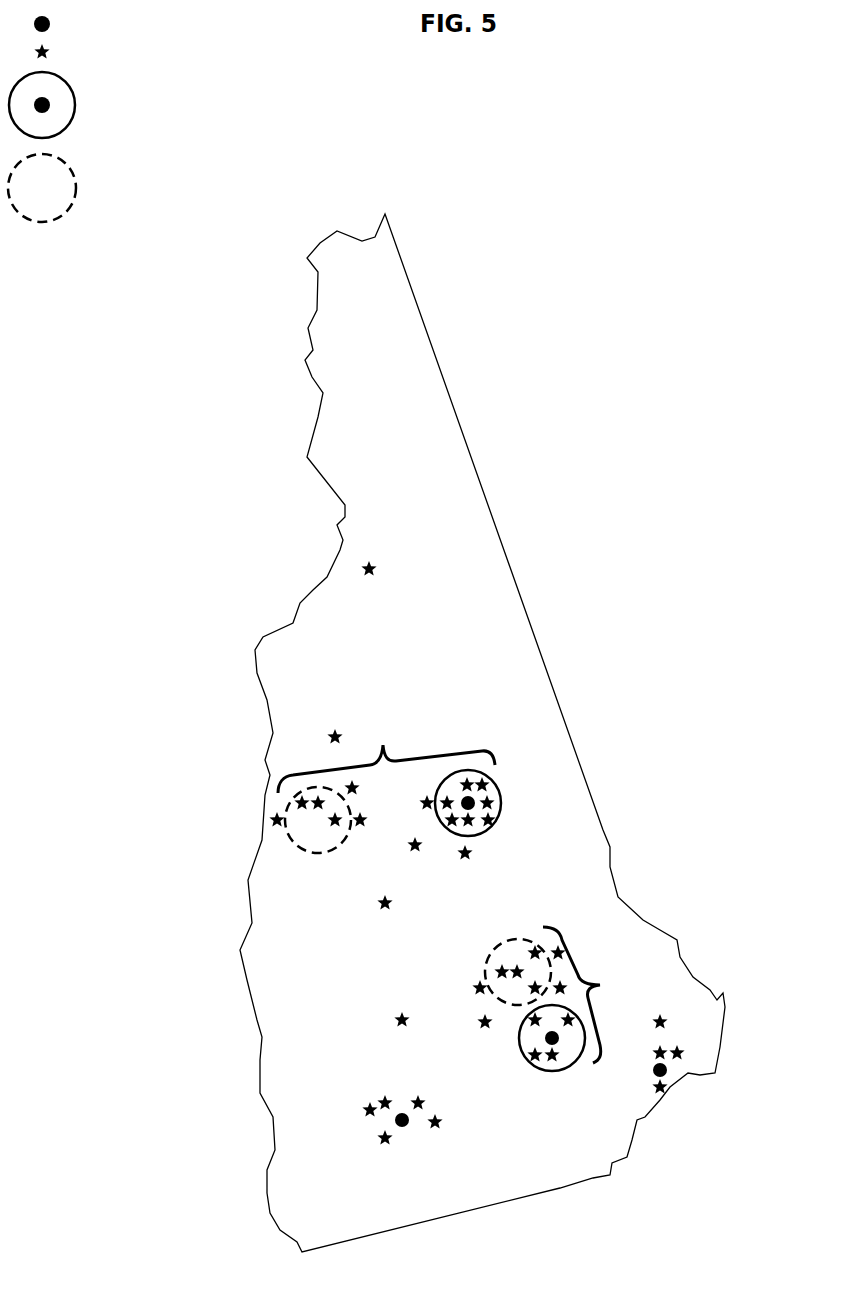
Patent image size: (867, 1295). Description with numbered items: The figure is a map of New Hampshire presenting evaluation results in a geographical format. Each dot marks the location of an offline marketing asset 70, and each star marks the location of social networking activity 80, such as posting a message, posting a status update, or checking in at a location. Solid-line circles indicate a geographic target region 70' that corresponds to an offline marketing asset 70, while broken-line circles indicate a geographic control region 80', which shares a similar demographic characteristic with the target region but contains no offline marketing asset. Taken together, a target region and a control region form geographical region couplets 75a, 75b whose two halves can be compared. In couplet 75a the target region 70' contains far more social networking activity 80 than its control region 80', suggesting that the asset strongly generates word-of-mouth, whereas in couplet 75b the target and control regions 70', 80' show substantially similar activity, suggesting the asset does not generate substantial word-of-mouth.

The offline marketing asset 70 is at (216, 23).
The social networking activity 80 is at (214, 51).
The geographic target region 70' is at (346, 105).
The geographic control region 80' is at (371, 188).
The geographical region couplet 75a is at (383, 745).
The geographical region couplet 75b is at (598, 985).